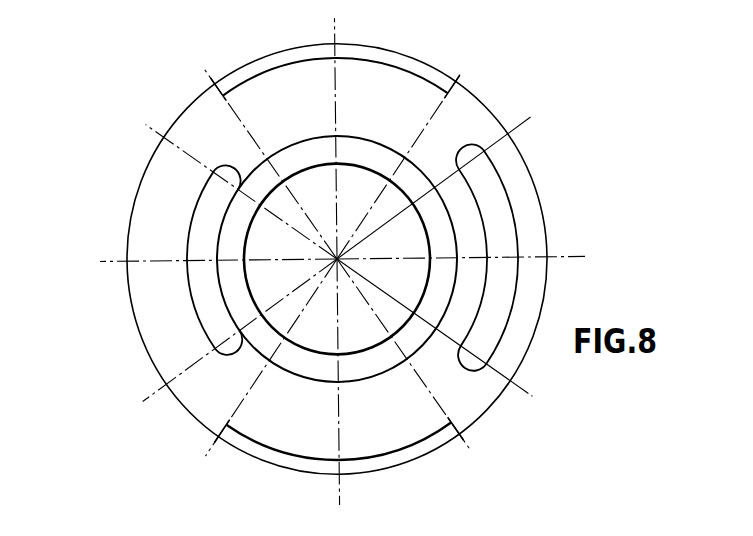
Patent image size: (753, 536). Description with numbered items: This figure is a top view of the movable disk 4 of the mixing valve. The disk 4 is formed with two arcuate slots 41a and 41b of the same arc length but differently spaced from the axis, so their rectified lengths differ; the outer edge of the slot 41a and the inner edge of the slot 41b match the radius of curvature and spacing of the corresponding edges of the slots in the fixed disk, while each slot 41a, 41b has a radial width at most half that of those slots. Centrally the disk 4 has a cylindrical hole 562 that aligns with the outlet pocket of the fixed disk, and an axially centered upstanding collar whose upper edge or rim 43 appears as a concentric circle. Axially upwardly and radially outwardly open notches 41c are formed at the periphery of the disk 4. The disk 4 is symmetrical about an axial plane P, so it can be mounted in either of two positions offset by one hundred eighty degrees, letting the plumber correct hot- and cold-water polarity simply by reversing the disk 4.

The movable disk 4 is at (568, 108).
The slot 41a is at (500, 211).
The slot 41b is at (200, 227).
The notches 41c is at (414, 68).
The upper edge or rim 43 is at (380, 360).
The cylindrical hole 562 is at (313, 360).
The axial plane P is at (334, 29).